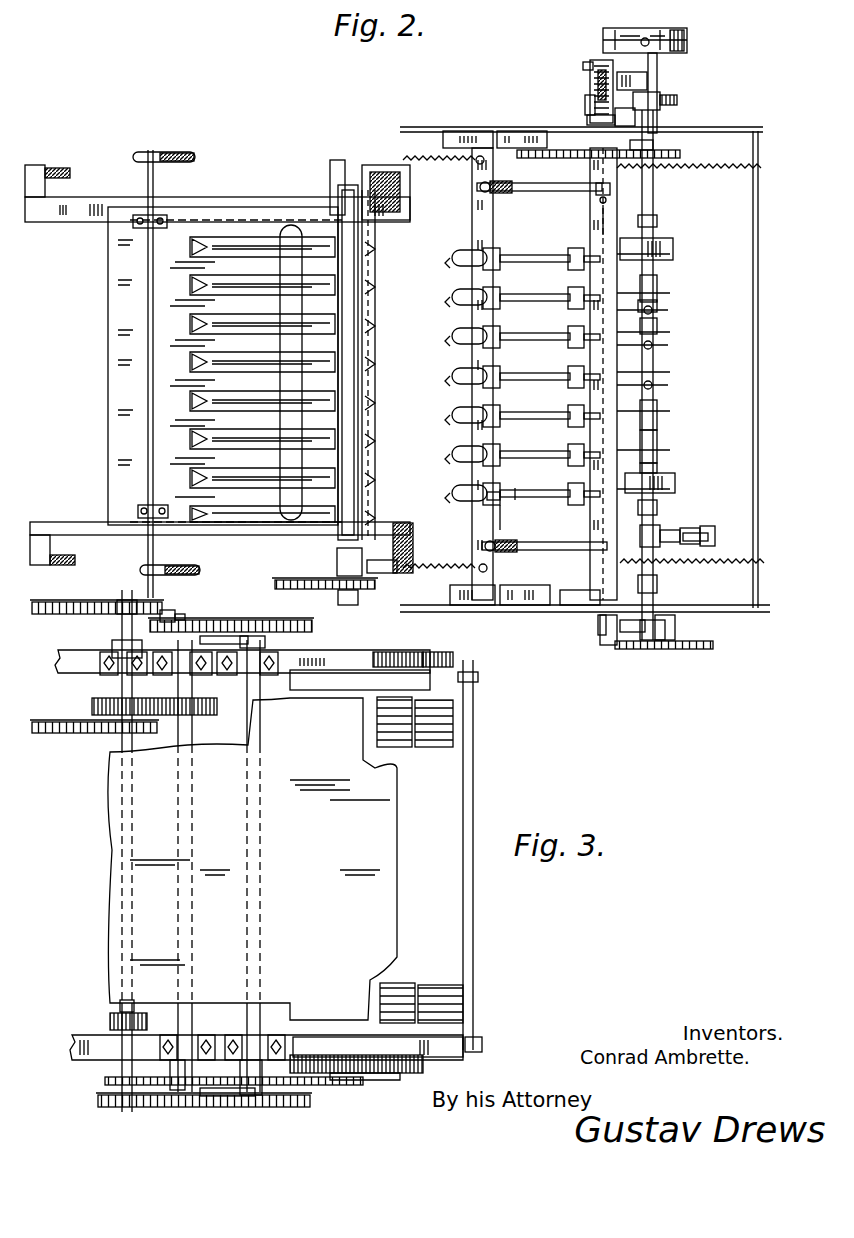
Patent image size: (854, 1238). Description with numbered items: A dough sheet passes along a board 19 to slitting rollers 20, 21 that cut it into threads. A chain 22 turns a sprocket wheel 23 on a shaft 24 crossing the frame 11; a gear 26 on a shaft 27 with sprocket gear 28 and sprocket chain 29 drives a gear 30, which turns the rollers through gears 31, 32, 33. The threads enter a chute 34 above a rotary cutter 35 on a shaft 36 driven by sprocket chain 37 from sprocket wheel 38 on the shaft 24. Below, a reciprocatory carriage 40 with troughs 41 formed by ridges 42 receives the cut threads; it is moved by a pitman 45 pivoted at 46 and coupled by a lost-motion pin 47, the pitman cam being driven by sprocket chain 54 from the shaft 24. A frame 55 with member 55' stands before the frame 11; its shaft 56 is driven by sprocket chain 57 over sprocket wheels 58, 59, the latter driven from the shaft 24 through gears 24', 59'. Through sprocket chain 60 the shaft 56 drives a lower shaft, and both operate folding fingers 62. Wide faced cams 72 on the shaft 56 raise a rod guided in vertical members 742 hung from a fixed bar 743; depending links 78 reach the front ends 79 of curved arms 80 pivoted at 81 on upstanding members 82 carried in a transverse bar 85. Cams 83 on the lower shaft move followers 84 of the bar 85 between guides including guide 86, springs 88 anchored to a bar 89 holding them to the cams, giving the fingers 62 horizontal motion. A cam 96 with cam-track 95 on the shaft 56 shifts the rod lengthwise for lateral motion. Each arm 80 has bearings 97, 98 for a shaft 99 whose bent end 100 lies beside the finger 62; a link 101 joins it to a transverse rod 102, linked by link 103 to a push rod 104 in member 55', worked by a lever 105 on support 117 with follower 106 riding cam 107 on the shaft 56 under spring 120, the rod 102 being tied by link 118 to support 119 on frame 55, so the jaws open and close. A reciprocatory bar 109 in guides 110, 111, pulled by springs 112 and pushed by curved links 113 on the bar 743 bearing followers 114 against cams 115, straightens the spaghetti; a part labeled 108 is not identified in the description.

In FIG. 2, the frame 11 is at (60, 168).
In FIG. 3, the frame 11 is at (352, 658).
In FIG. 3, the guide or board 19 is at (252, 859).
In FIG. 3, the slitting or stripping roller 20 is at (400, 985).
In FIG. 3, the slitting or stripping roller 21 is at (445, 987).
In FIG. 3, the chain 22 is at (60, 602).
In FIG. 3, the sprocket wheel 23 is at (165, 612).
In FIG. 3, the shaft 24 is at (117, 866).
In FIG. 3, the gear 24' is at (128, 705).
In FIG. 3, the gear 26 is at (110, 1020).
In FIG. 3, the shaft 27 is at (125, 1003).
In FIG. 3, the sprocket gear 28 is at (105, 1080).
In FIG. 3, the sprocket chain 29 is at (175, 1092).
In FIG. 3, the gear 30 is at (375, 1082).
In FIG. 3, the gear 31 is at (425, 1064).
In FIG. 3, the gear 32 is at (385, 652).
In FIG. 3, the gear 33 is at (437, 664).
In FIG. 2, the chute 34 is at (372, 245).
In FIG. 2, the rotary cutter 35 is at (338, 227).
In FIG. 2, the shaft 36 is at (337, 555).
In FIG. 3, the sprocket chain 37 is at (200, 1108).
In FIG. 3, the sprocket wheel 38 is at (100, 1100).
In FIG. 2, the reciprocatory carriage 40 is at (103, 334).
In FIG. 2, the longitudinal troughs 41 is at (232, 262).
In FIG. 2, the raised portions or ridges 42 is at (190, 397).
In FIG. 2, the pitman 45 is at (195, 157).
In FIG. 3, the pitman 45 is at (200, 622).
In FIG. 3, the pivot 46 is at (262, 828).
In FIG. 2, the pin of lost-motion pin-and-slot connection 47 is at (158, 554).
In FIG. 3, the sprocket chain 54 is at (70, 734).
In FIG. 2, the frame 55 is at (503, 392).
In FIG. 2, the frame member 55' is at (585, 350).
In FIG. 2, the shaft 56 is at (657, 227).
In FIG. 2, the sprocket chain 57 is at (538, 160).
In FIG. 3, the sprocket chain 57 is at (262, 620).
In FIG. 2, the sprocket wheel 58 is at (670, 153).
In FIG. 3, the sprocket wheel 59 is at (176, 859).
In FIG. 3, the gear 59' is at (244, 864).
In FIG. 2, the sprocket chain 60 is at (680, 650).
In FIG. 2, the folding fingers 62 is at (470, 500).
In FIG. 2, the wide faced cams 72 is at (675, 247).
In FIG. 2, the depending links 78 is at (655, 378).
In FIG. 2, the front ends of curved arms 79 is at (657, 308).
In FIG. 2, the curved arms 80 is at (600, 395).
In FIG. 2, the pivot 81 is at (672, 490).
In FIG. 2, the upstanding members 82 is at (655, 330).
In FIG. 2, the cams 83 is at (677, 100).
In FIG. 2, the followers 84 is at (588, 103).
In FIG. 2, the transverse bar 85 is at (595, 522).
In FIG. 2, the guide 86 is at (500, 140).
In FIG. 2, the springs 88 is at (735, 168).
In FIG. 2, the bar 89 is at (715, 542).
In FIG. 2, the cam-track 95 is at (690, 38).
In FIG. 2, the cam 96 is at (690, 50).
In FIG. 2, the bearing 97 is at (503, 507).
In FIG. 2, the bearing 98 is at (516, 492).
In FIG. 2, the shaft 99 is at (500, 385).
In FIG. 2, the end of shaft 100 is at (455, 447).
In FIG. 2, the link 101 is at (598, 330).
In FIG. 2, the horizontal transverse rod 102 is at (600, 217).
In FIG. 2, the link 103 is at (596, 190).
In FIG. 2, the push rod 104 is at (598, 82).
In FIG. 2, the lever 105 is at (583, 66).
In FIG. 2, the follower 106 is at (598, 70).
In FIG. 2, the cam 107 is at (657, 75).
In FIG. 2, the bar 108 is at (300, 422).
In FIG. 2, the reciprocatory bar 109 is at (480, 538).
In FIG. 2, the guide 110 is at (490, 606).
In FIG. 2, the guide 111 is at (455, 136).
In FIG. 2, the springs 112 is at (440, 165).
In FIG. 2, the curved links 113 is at (720, 533).
In FIG. 2, the followers 114 is at (682, 530).
In FIG. 2, the cams 115 is at (690, 530).
In FIG. 2, the support 117 is at (657, 85).
In FIG. 2, the link 118 is at (590, 600).
In FIG. 2, the support 119 is at (596, 650).
In FIG. 2, the spring 120 is at (590, 115).
In FIG. 2, the vertical members 742 is at (658, 286).
In FIG. 2, the fixed bar 743 is at (658, 320).